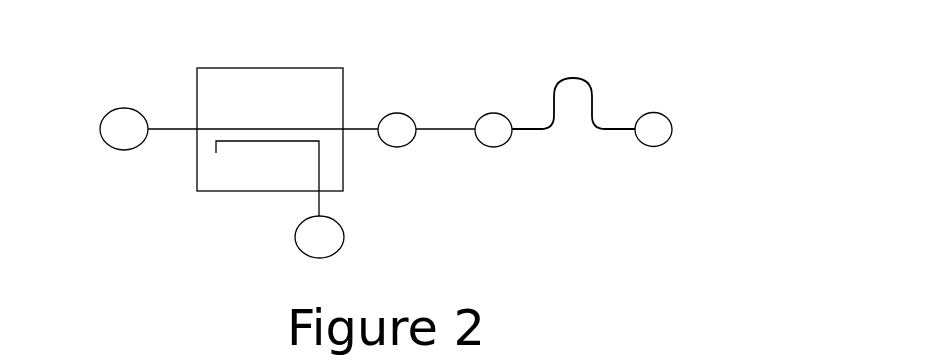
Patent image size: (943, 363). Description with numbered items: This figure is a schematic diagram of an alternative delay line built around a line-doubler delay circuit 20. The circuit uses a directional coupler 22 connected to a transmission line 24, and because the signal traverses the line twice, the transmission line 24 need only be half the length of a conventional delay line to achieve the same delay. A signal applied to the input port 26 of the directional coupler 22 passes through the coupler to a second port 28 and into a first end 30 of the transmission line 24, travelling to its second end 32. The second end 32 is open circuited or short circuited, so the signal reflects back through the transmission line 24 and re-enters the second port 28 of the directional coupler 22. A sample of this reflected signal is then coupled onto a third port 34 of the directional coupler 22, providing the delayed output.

The line-doubler delay circuit 20 is at (738, 46).
The directional coupler 22 is at (268, 68).
The transmission line 24 is at (562, 80).
The input port 26 is at (110, 109).
The second port 28 is at (404, 146).
The first end 30 is at (500, 146).
The second end 32 is at (658, 146).
The third port 34 is at (310, 256).